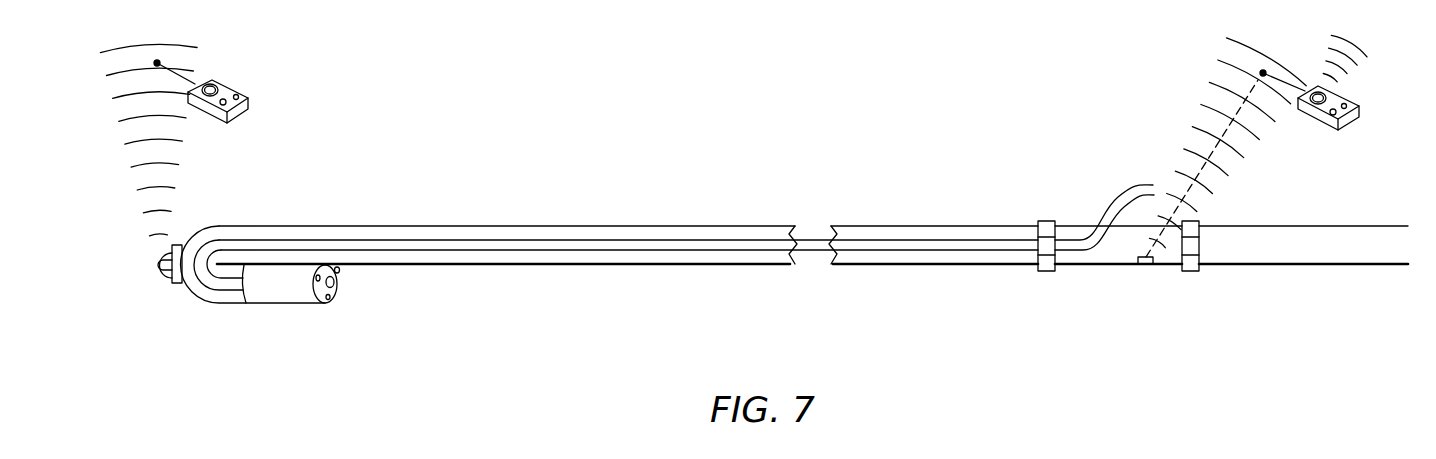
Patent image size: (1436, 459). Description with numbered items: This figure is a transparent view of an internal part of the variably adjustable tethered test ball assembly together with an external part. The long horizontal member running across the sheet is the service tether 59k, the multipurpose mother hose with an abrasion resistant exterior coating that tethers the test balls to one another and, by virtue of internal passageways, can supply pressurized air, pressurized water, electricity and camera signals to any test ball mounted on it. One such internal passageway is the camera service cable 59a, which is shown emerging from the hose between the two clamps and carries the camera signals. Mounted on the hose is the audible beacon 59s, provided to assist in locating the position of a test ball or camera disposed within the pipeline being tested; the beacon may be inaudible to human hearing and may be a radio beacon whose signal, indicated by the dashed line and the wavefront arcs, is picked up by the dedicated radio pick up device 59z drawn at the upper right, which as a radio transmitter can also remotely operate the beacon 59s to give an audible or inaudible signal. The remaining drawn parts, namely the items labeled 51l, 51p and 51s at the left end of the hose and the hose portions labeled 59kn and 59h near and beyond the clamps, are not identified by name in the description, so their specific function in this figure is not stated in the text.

The light emitters 51l is at (314, 306).
The probe body 51p is at (331, 288).
The signal cable 51s is at (808, 241).
The camera service cable 59a is at (1116, 203).
The service tether 59k is at (940, 267).
The conduit section between clamps 59kn is at (1112, 268).
The audible beacon 59s is at (1144, 267).
The hose section 59h is at (1292, 256).
The radio pick up device 59z is at (1347, 121).